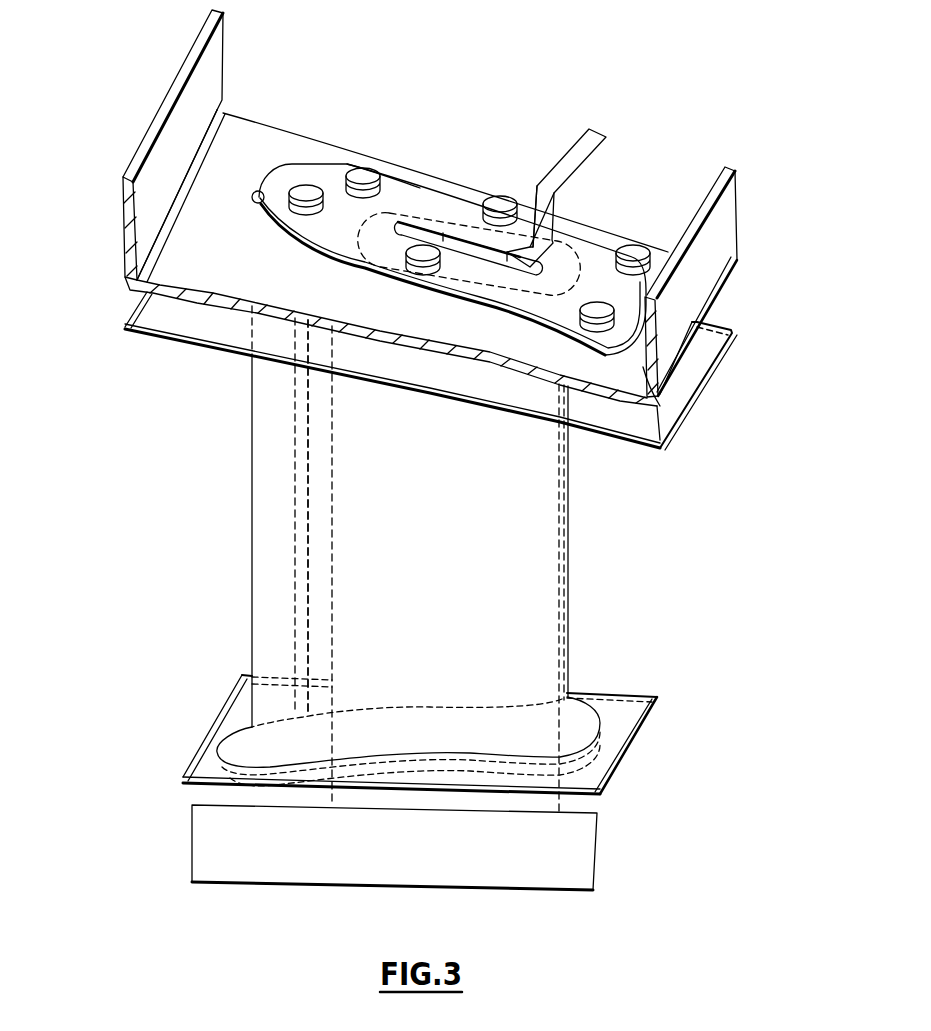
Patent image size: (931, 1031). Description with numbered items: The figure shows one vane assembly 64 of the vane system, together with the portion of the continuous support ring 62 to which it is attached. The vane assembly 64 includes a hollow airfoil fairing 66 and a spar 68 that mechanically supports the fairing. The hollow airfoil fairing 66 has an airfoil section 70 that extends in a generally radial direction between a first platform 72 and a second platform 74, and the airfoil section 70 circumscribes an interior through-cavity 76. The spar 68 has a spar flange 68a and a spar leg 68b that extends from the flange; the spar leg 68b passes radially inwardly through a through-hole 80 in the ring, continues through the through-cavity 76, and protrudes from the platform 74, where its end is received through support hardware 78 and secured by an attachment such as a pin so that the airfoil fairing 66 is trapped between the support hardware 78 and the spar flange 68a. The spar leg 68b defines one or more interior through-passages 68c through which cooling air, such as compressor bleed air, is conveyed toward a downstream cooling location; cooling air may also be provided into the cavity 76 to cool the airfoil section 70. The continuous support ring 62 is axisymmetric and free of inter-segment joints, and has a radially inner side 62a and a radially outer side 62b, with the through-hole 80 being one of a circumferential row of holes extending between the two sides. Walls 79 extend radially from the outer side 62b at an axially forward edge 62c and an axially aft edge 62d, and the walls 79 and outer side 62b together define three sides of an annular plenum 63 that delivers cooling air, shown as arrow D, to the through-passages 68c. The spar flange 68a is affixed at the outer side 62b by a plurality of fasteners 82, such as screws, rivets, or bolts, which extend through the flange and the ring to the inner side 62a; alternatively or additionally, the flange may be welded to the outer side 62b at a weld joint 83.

The continuous support ring 62 is at (327, 142).
The radially inner side 62a is at (193, 304).
The radially outer side 62b is at (247, 143).
The axially forward edge 62c is at (124, 281).
The axially aft edge 62d is at (657, 397).
The annular plenum 63 is at (533, 148).
The vane assembly 64 is at (483, 598).
The hollow airfoil fairing 66 is at (268, 529).
The spar 68 is at (573, 223).
The spar flange 68a is at (418, 197).
The spar leg 68b is at (332, 588).
The interior through-passage 68c is at (503, 236).
The airfoil section 70 is at (480, 570).
The first platform 72 is at (658, 440).
The second platform 74 is at (605, 757).
The interior through-cavity 76 is at (308, 470).
The support hardware 78 is at (597, 850).
The wall 79 is at (124, 196).
The through-hole 80 is at (374, 247).
The fastener 82 is at (597, 308).
The weld joint 83 is at (252, 195).